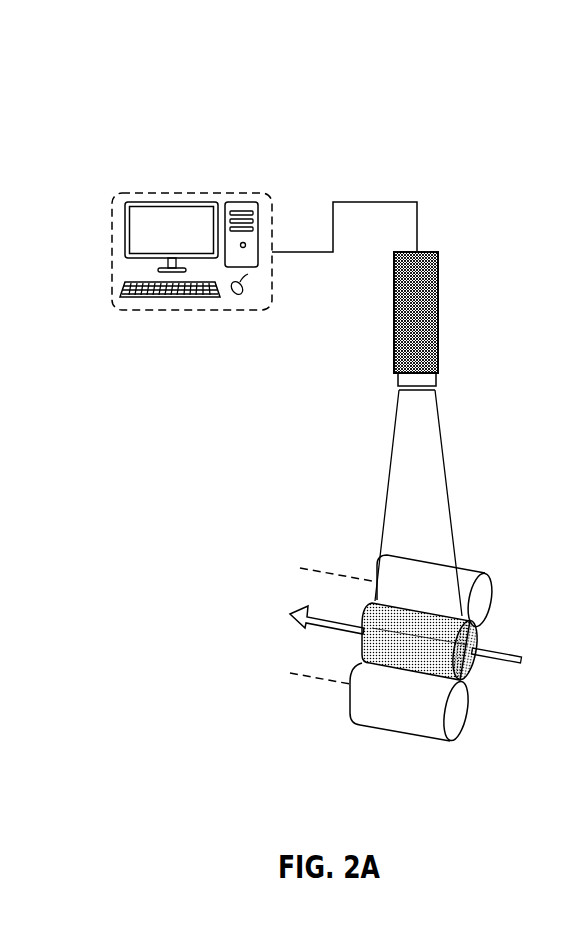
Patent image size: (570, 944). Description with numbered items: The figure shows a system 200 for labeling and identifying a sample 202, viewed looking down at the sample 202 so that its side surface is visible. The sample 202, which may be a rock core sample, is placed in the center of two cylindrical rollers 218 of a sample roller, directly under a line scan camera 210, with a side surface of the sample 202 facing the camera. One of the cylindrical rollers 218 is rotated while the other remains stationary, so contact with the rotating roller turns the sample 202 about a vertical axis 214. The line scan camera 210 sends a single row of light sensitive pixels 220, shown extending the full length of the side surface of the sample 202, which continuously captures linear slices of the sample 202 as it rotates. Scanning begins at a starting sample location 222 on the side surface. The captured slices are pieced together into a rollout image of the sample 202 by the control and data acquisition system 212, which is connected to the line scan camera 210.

The system 200 is at (97, 71).
The sample 202 is at (437, 677).
The line scan camera 210 is at (394, 307).
The control and data acquisition system 212 is at (102, 193).
The vertical axis 214 is at (342, 632).
The cylindrical rollers 218 is at (292, 568).
The single row of light sensitive pixels 220 is at (390, 440).
The starting sample location 222 is at (453, 610).